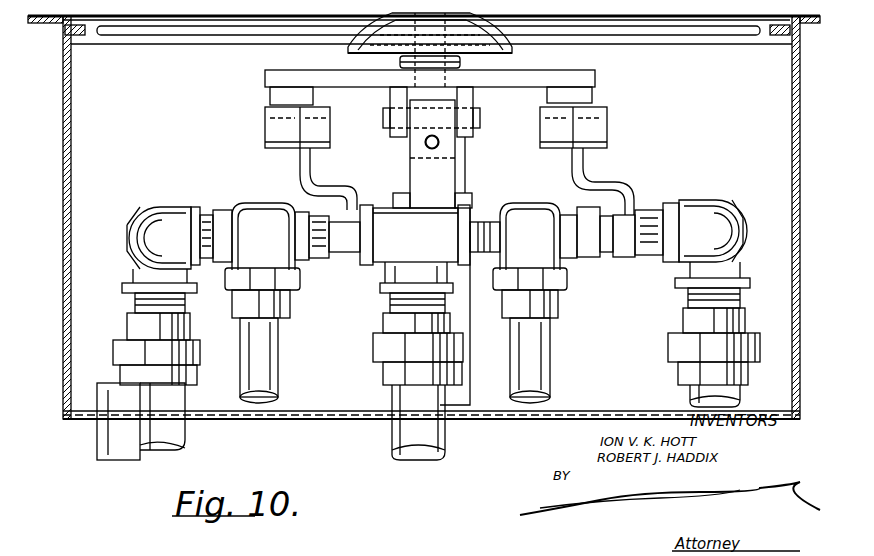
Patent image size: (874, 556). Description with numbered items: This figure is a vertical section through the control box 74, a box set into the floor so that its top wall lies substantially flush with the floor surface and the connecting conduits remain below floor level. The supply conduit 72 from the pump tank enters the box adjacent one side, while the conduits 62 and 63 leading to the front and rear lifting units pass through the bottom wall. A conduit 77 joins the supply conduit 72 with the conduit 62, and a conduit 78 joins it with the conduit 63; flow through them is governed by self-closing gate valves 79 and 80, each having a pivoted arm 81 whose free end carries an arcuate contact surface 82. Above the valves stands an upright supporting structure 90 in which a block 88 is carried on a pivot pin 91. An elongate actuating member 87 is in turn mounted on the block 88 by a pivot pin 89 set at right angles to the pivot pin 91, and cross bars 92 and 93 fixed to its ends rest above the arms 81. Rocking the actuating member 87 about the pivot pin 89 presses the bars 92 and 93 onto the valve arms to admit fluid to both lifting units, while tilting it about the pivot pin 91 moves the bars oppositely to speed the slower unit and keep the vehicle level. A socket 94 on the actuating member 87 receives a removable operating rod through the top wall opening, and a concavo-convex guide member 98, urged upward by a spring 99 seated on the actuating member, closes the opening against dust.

The conduit 62 is at (686, 298).
The conduit 63 is at (186, 434).
The supply conduit 72 is at (440, 432).
The control box 74 is at (72, 181).
The conduit 77 is at (695, 222).
The conduit 78 is at (168, 240).
The valve 79 is at (533, 206).
The valve 80 is at (253, 206).
The pivoted arm 81 is at (608, 180).
The arcuate contact surface 82 is at (272, 128).
The actuating member 87 is at (318, 176).
The block 88 is at (400, 137).
The pivot pin 89 is at (383, 118).
The upright supporting structure 90 is at (445, 181).
The pivot pin 91 is at (439, 144).
The cross bar 92 is at (588, 91).
The cross bar 93 is at (272, 96).
The socket 94 is at (465, 64).
The concavo-convex guide member 98 is at (372, 48).
The spring 99 is at (430, 50).